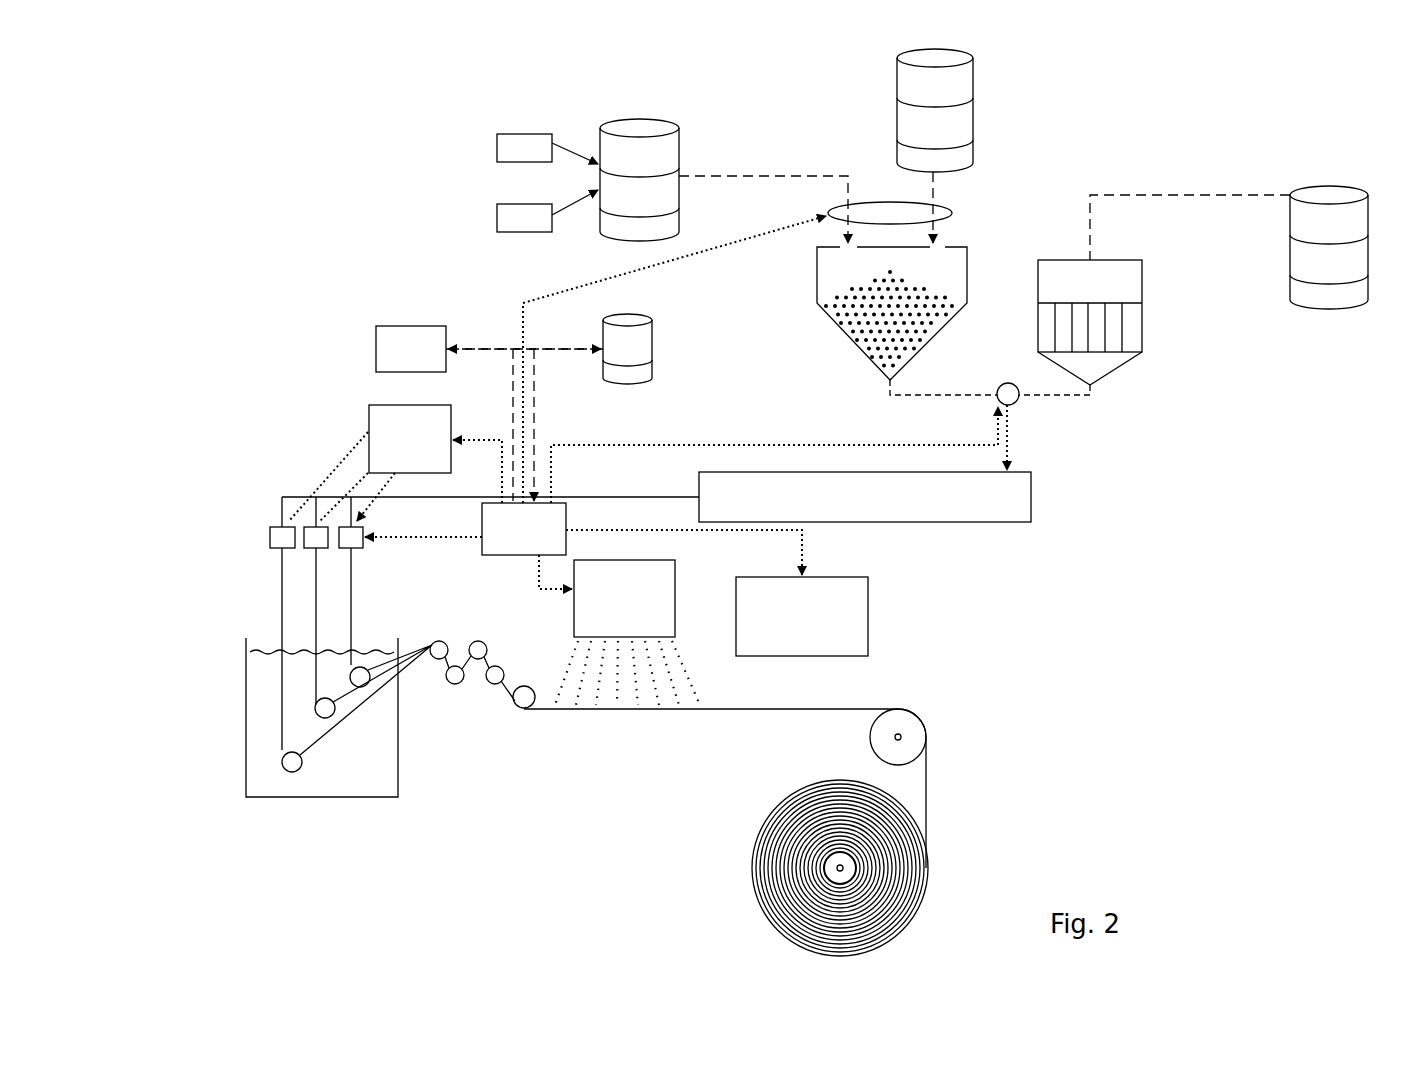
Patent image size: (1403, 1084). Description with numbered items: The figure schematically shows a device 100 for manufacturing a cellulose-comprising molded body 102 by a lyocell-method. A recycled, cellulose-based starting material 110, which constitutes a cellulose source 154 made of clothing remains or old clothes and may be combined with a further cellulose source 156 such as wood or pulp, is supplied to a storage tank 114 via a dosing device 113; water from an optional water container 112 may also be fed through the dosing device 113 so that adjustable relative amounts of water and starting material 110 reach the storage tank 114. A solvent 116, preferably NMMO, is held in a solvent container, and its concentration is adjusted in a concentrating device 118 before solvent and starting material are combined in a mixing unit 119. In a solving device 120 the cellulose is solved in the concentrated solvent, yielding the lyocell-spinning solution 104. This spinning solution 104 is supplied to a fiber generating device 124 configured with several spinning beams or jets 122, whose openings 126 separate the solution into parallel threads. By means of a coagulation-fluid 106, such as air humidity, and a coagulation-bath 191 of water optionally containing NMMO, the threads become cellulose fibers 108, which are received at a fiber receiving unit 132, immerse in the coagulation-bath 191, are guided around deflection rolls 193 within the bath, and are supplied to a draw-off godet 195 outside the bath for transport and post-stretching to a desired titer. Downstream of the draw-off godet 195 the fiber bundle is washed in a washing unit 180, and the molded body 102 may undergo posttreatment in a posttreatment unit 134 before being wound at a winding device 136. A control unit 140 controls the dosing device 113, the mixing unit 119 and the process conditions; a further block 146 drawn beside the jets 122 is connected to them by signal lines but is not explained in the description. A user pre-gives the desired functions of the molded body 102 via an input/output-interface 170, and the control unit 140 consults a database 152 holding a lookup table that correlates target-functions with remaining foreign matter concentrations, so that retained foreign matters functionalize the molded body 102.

The device 100 is at (360, 180).
The molded body 102 is at (770, 843).
The spinning solution 104 is at (580, 497).
The coagulation-fluid 106 is at (262, 735).
The cellulose fibers 108 is at (858, 708).
The starting material 110 is at (641, 122).
The water container 112 is at (963, 78).
The dosing device 113 is at (882, 204).
The storage tank 114 is at (965, 245).
The solvent 116 is at (1327, 192).
The concentrating device 118 is at (1142, 277).
The mixing unit 119 is at (1018, 400).
The solving device 120 is at (1031, 497).
The jets 122 is at (283, 523).
The fiber generating device 124 is at (216, 535).
The openings 126 is at (377, 568).
The fiber receiving unit 132 is at (416, 783).
The posttreatment unit 134 is at (782, 629).
The winding device 136 is at (828, 872).
The control unit 140 is at (504, 542).
The control unit 146 is at (390, 453).
The database 152 is at (549, 407).
The cellulose source 154 is at (547, 148).
The further cellulose source 156 is at (547, 211).
The input/output-interface 170 is at (391, 362).
The washing unit 180 is at (605, 612).
The coagulation-bath 191 is at (241, 683).
The deflection roll 193 is at (290, 768).
The draw-off godet 195 is at (488, 639).